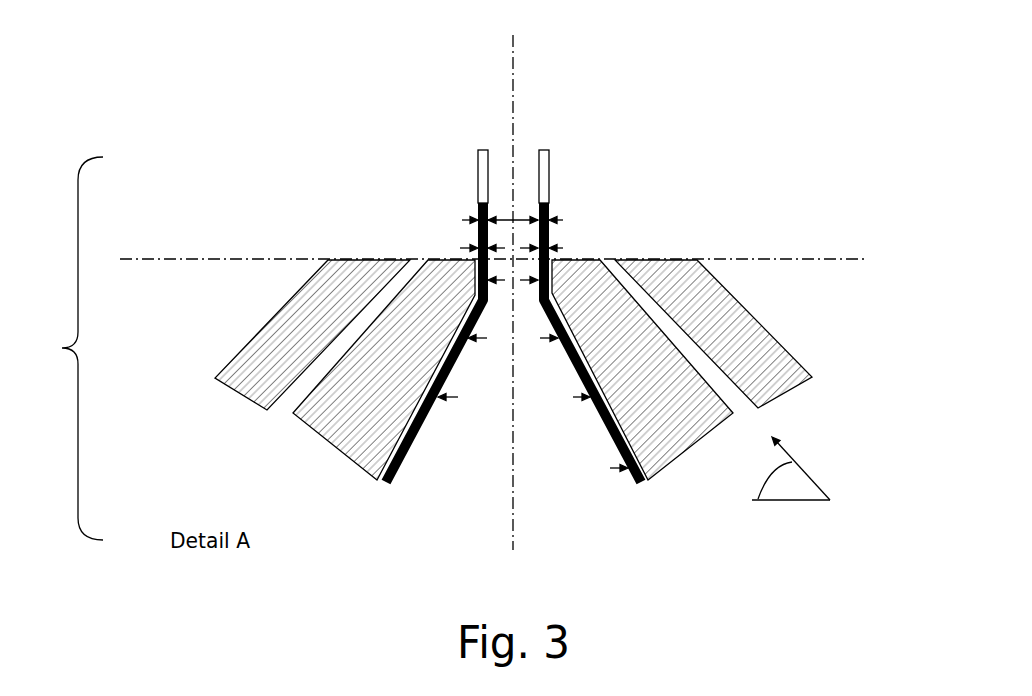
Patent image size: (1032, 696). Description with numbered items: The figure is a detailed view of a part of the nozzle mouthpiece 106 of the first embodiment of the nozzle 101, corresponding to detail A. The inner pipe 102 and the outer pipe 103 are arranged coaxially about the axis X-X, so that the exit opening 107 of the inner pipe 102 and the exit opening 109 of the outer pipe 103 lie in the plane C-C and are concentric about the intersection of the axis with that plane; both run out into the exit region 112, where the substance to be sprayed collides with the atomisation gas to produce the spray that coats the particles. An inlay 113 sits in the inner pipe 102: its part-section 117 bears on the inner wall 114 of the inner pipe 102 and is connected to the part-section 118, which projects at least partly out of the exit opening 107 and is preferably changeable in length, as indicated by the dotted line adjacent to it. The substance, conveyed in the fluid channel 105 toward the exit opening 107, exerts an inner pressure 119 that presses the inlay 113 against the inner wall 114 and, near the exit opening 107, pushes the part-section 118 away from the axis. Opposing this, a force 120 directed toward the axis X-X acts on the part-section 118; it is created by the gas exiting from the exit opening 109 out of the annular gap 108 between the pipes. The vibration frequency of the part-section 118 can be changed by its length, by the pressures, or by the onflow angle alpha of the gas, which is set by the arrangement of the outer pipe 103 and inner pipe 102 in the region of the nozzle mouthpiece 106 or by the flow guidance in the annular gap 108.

The nozzle 101 is at (216, 82).
The inner pipe 102 is at (323, 435).
The outer pipe 103 is at (788, 380).
The fluid channel 105 is at (485, 472).
The nozzle mouthpiece 106 is at (60, 348).
The exit opening of the inner pipe 107 is at (525, 236).
The annular gap 108 is at (330, 355).
The exit opening of the outer pipe 109 is at (422, 245).
The exit region 112 is at (605, 181).
The inlay 113 is at (566, 230).
The inner wall of the inner pipe 114 is at (646, 492).
The part-section of the inlay 117 is at (614, 437).
The part-section of the inlay 118 is at (556, 219).
The inner pressure 119 is at (503, 219).
The force acting in the direction of the axis X-X 120 is at (463, 219).